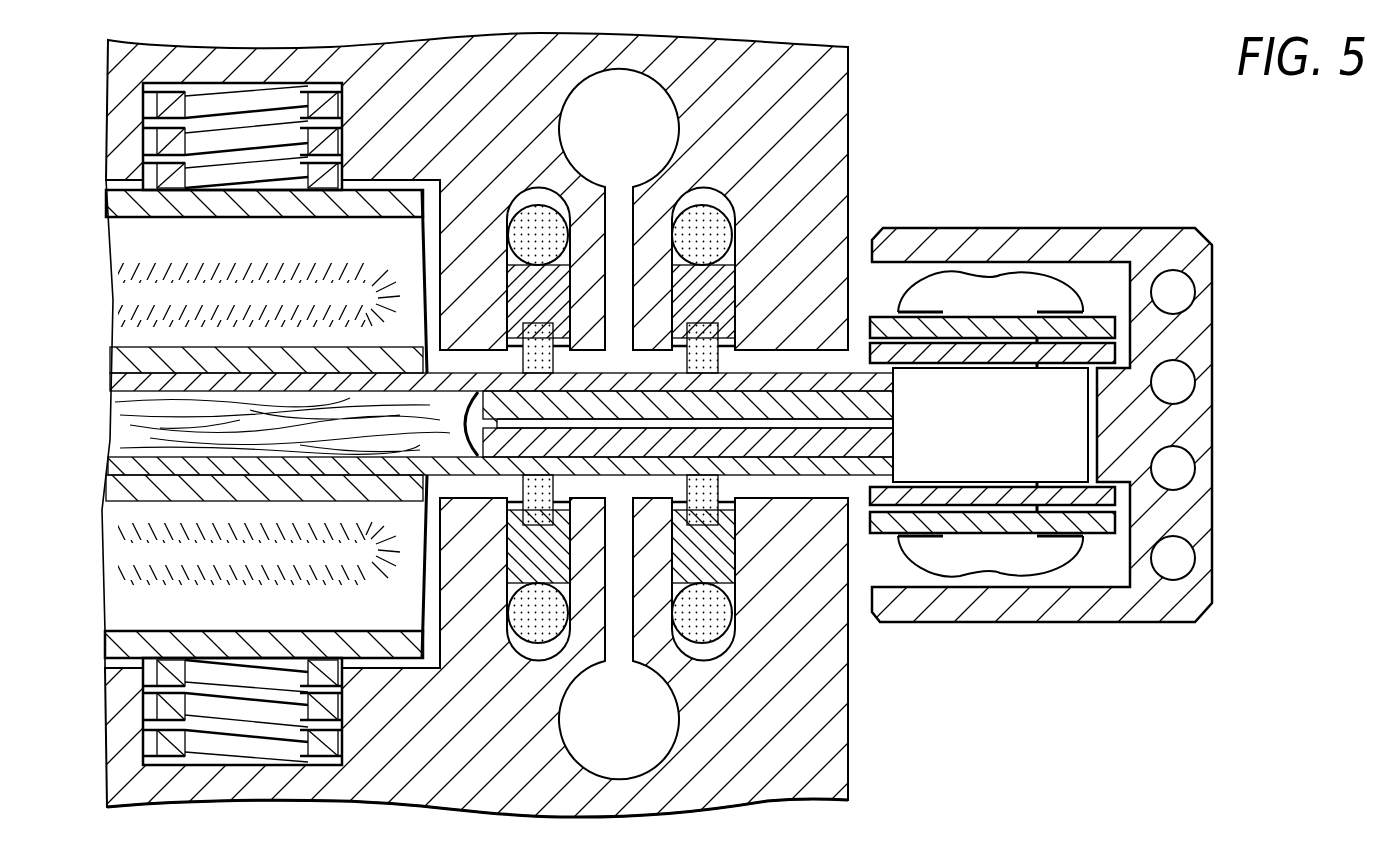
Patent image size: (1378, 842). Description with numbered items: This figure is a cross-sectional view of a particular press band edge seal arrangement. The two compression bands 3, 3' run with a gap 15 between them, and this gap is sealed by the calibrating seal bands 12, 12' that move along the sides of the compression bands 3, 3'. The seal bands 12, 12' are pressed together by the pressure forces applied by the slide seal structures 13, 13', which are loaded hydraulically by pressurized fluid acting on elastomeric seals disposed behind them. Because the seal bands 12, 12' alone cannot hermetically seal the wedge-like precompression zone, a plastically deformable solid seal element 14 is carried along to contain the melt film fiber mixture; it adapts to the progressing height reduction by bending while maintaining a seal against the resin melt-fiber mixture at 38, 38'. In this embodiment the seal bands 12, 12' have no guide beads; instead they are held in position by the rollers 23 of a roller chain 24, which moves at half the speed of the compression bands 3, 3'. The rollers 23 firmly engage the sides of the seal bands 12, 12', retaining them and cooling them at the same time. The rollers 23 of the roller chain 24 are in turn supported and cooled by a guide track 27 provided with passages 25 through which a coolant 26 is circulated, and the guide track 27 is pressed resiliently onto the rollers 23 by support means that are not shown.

The compression band 3 is at (469, 404).
The compression band 3' is at (474, 480).
The calibrated seal band 12 is at (688, 357).
The calibrated seal band 12' is at (688, 496).
The slide seal structure 13 is at (620, 260).
The slide seal structure 13' is at (620, 589).
The plastically deformable solid seal element 14 is at (323, 353).
The gap 15 is at (523, 423).
The roller 23 is at (1030, 407).
The roller chain 24 is at (1090, 330).
The passage 25 is at (1184, 460).
The coolant 26 is at (1172, 545).
The guide track 27 is at (1162, 598).
The seal location 38 is at (271, 281).
The seal location 38' is at (292, 529).